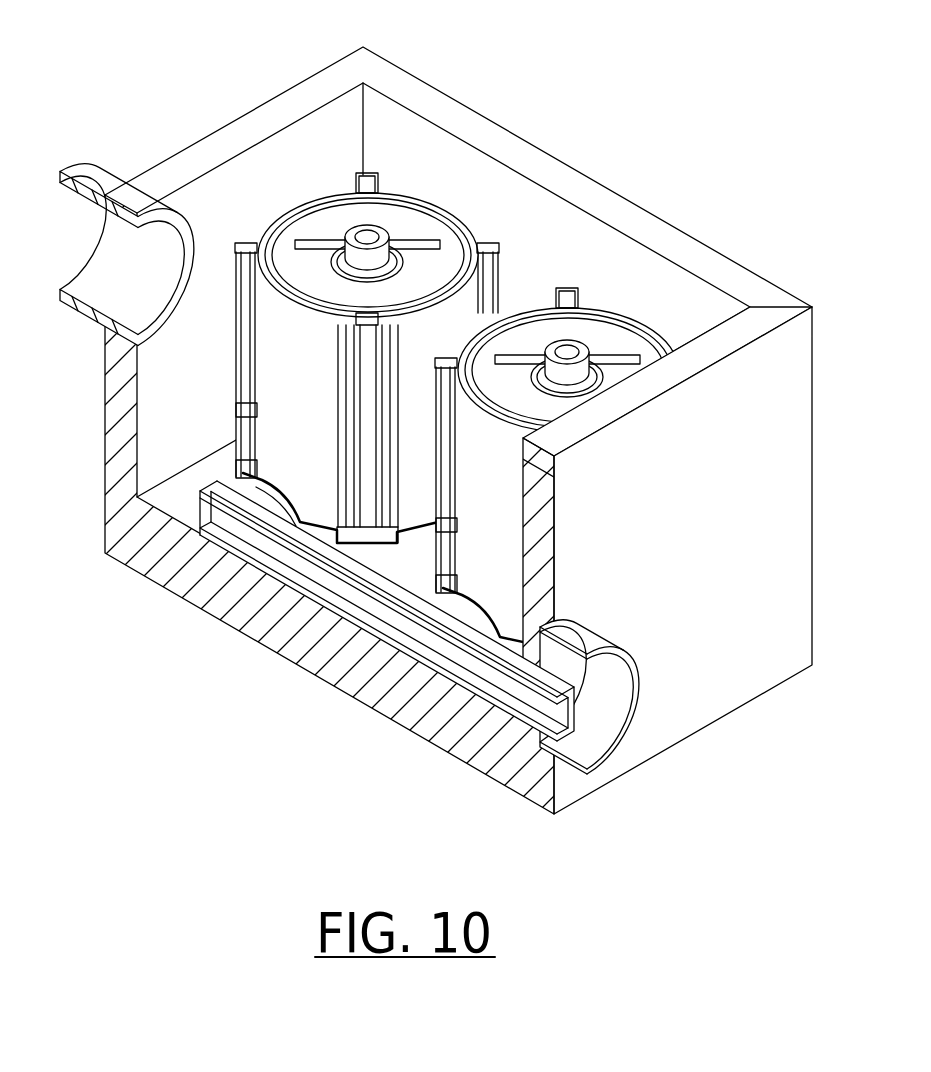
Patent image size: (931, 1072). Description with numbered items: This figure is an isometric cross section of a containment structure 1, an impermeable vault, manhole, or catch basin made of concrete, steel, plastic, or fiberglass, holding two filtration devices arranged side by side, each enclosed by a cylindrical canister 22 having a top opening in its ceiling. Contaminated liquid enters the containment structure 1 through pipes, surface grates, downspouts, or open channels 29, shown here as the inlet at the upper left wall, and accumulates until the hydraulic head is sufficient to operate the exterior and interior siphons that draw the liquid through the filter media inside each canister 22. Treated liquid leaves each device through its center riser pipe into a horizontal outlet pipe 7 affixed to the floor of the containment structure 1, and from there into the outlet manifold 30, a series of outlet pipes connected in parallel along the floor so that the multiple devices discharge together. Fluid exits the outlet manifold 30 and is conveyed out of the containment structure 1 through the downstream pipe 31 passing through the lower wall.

The containment structure 1 is at (436, 430).
The outlet pipe 7 is at (270, 513).
The canister 22 is at (427, 278).
The open channels 29 is at (100, 183).
The outlet manifold 30 is at (362, 615).
The downstream pipe 31 is at (583, 643).